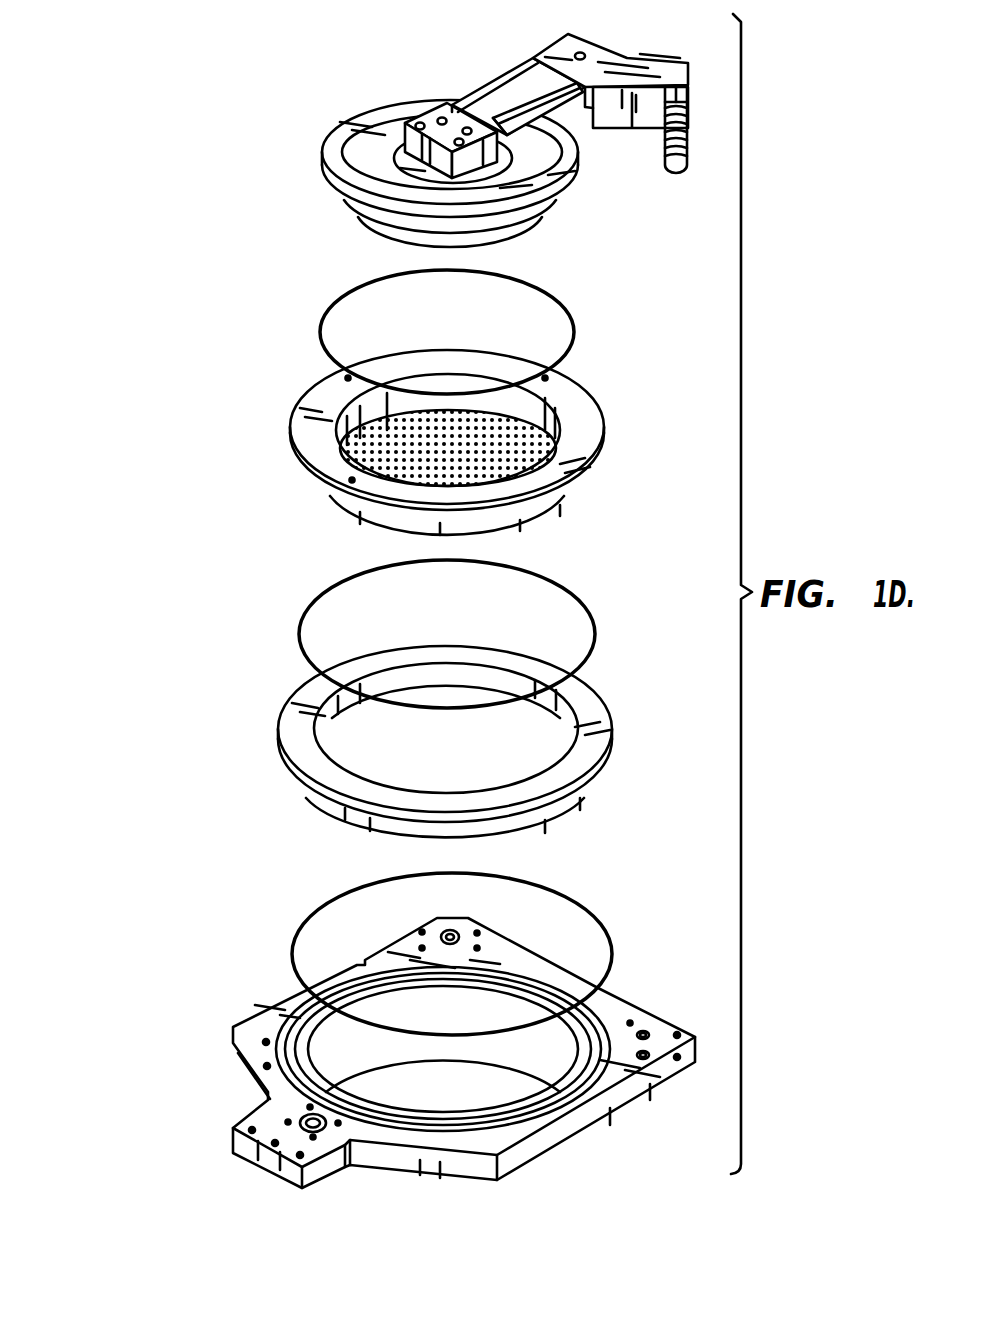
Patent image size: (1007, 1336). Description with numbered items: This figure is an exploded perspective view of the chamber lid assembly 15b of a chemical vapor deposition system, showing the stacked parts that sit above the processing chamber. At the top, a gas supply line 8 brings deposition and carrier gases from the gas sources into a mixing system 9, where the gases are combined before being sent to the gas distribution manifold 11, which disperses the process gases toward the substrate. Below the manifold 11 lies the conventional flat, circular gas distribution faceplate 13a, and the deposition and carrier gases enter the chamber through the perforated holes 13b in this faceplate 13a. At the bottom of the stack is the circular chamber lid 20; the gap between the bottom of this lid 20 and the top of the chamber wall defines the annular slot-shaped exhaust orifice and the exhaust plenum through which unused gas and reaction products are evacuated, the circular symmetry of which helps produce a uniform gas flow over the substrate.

The gas supply line 8 is at (513, 97).
The mixing system 9 is at (440, 128).
The gas distribution manifold 11 is at (533, 202).
The gas distribution faceplate 13a is at (295, 430).
The perforated holes 13b is at (493, 452).
The chamber lid assembly 15b is at (110, 821).
The circular chamber lid 20 is at (253, 1030).